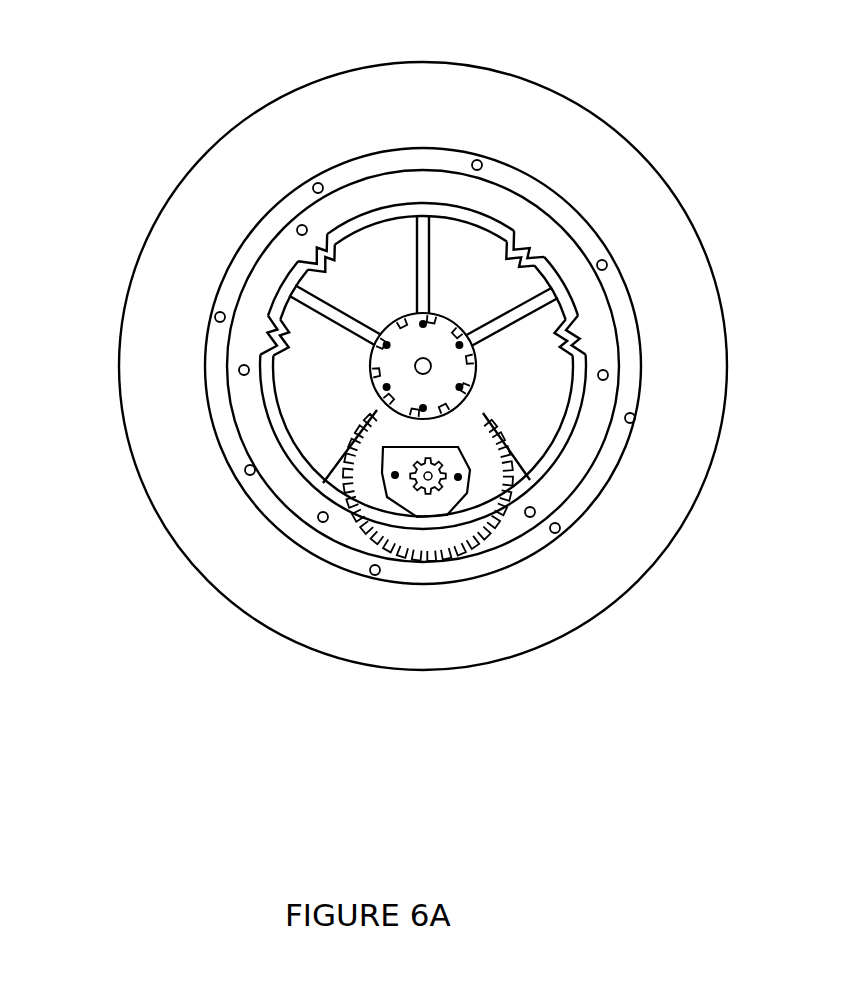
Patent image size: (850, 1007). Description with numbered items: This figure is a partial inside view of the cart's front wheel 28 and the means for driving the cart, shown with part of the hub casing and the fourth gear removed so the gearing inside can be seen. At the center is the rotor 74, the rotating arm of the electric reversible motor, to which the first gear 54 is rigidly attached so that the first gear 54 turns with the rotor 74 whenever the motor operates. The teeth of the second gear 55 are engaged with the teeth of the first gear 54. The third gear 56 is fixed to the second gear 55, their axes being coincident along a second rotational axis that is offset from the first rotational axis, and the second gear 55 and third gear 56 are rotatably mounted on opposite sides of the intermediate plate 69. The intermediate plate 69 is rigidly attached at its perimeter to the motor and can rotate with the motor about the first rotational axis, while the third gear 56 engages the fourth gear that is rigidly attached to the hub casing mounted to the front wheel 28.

The front wheel 28 is at (655, 563).
The first gear 54 is at (457, 317).
The second gear 55 is at (433, 557).
The third gear 56 is at (437, 495).
The intermediate plate 69 is at (551, 391).
The rotor 74 is at (427, 365).